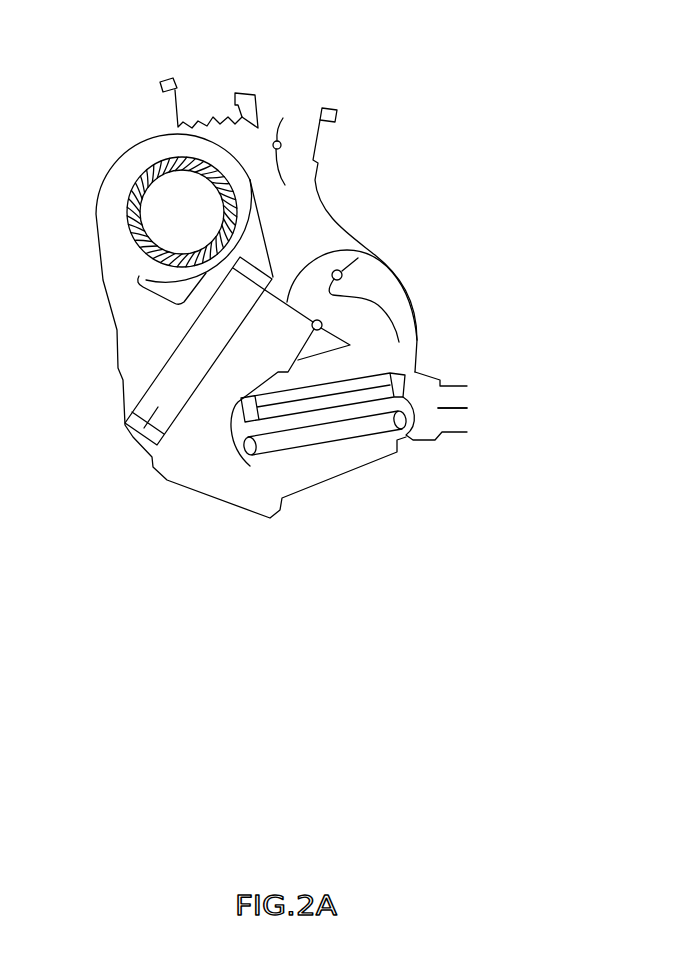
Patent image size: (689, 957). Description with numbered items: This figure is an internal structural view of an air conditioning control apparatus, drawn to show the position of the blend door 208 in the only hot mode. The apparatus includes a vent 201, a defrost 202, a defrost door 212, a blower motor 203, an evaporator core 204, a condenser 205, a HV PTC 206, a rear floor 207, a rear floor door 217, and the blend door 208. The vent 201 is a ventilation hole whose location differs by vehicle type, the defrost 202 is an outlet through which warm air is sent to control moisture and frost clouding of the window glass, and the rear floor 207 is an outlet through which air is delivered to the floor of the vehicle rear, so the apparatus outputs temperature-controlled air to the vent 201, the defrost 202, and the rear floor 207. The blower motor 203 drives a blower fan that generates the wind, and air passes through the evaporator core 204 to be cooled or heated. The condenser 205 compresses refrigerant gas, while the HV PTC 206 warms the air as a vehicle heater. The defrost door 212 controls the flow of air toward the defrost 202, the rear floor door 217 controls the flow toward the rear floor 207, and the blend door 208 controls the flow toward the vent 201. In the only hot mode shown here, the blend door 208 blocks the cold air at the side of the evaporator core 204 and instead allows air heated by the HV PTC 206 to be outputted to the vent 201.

The vent 201 is at (288, 117).
The defrost 202 is at (217, 110).
The blower motor 203 is at (167, 207).
The evaporator core 204 is at (132, 434).
The condenser 205 is at (305, 440).
The HV PTC 206 is at (360, 390).
The rear floor 207 is at (480, 408).
The blend door 208 is at (341, 272).
The defrost door 212 is at (208, 115).
The rear floor door 217 is at (347, 267).